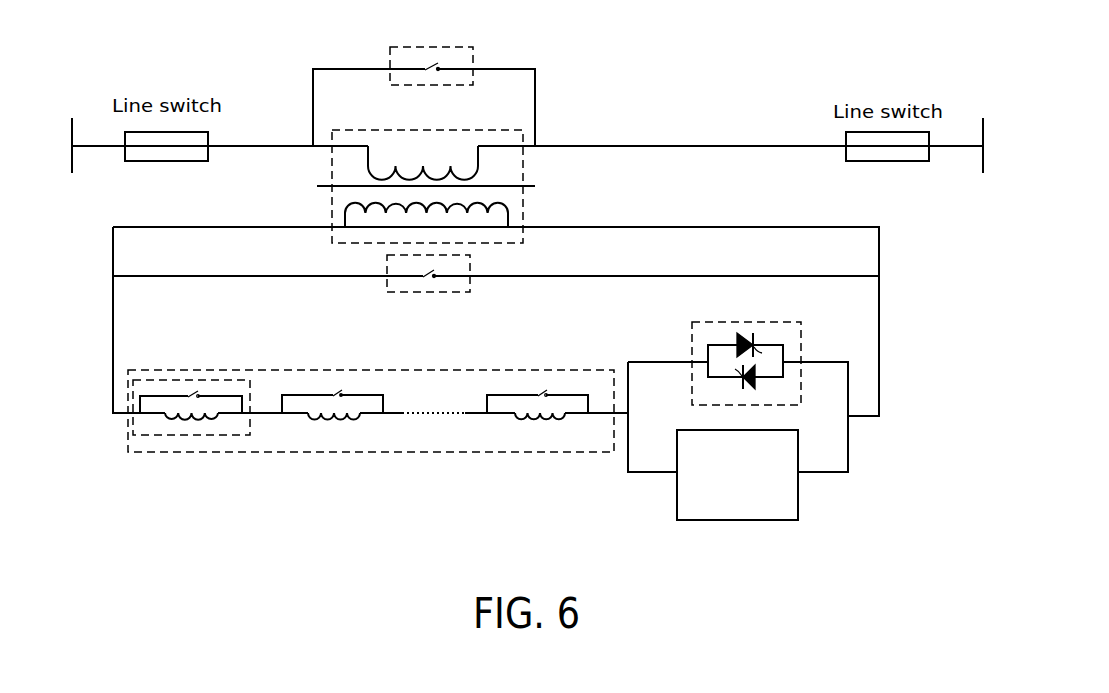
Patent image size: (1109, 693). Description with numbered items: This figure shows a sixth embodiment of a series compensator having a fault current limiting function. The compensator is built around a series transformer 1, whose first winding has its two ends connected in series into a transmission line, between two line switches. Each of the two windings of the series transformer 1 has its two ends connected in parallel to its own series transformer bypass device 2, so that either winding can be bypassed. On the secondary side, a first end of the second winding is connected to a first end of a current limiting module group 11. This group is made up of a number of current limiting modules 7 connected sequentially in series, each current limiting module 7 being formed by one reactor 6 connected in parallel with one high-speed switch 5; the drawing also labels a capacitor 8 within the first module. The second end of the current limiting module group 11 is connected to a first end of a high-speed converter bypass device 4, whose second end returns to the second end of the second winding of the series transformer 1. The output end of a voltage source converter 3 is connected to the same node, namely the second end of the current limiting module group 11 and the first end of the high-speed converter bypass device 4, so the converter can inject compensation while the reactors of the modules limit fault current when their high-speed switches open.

The series transformer 1 is at (328, 198).
The series transformer bypass device 2 is at (457, 37).
The voltage source converter 3 is at (673, 505).
The high-speed converter bypass device 4 is at (798, 332).
The high-speed switch 5 is at (195, 392).
The reactor 6 is at (230, 425).
The current limiting module 7 is at (215, 389).
The capacitor 8 is at (191, 389).
The current limiting module group 11 is at (353, 406).